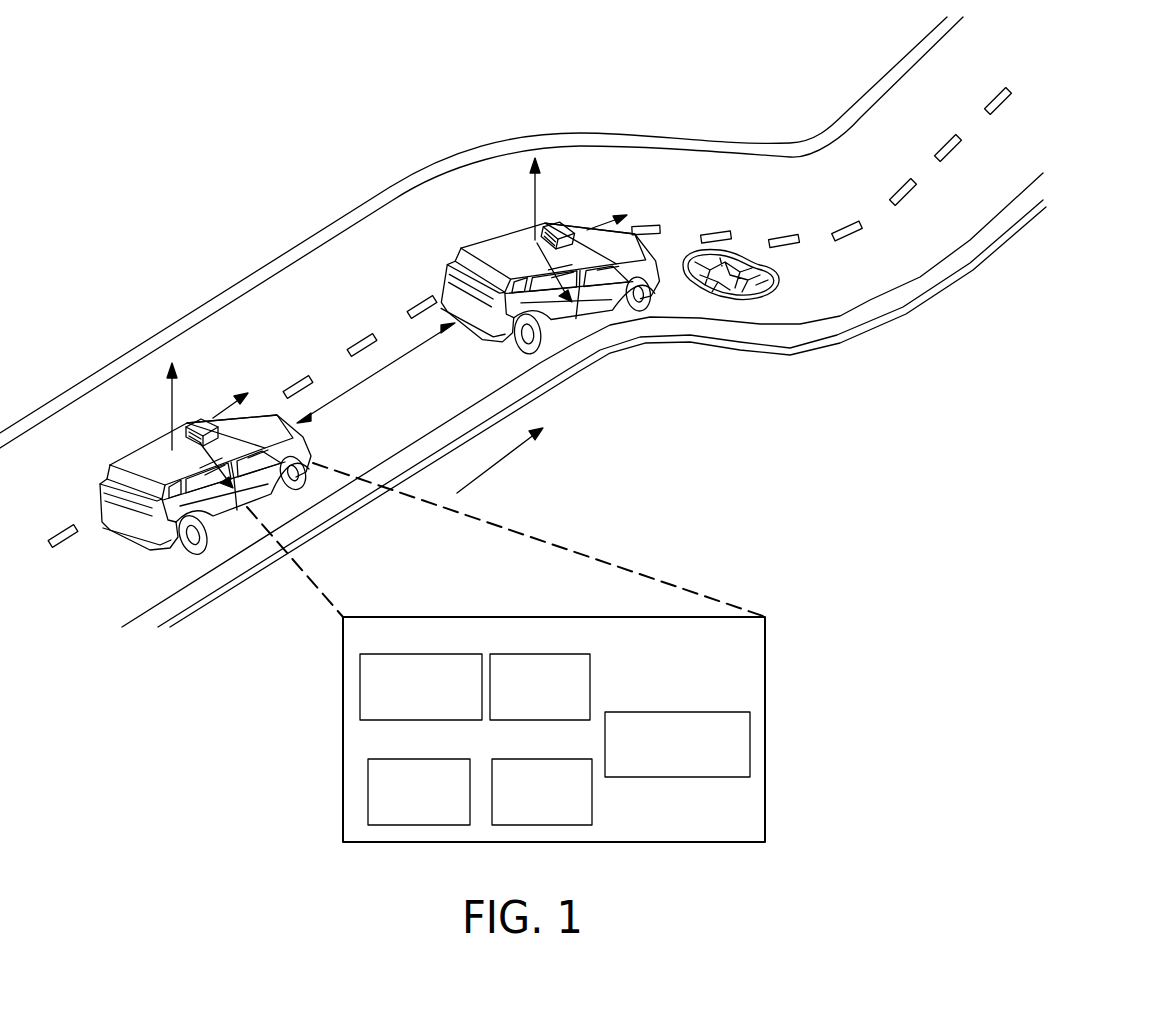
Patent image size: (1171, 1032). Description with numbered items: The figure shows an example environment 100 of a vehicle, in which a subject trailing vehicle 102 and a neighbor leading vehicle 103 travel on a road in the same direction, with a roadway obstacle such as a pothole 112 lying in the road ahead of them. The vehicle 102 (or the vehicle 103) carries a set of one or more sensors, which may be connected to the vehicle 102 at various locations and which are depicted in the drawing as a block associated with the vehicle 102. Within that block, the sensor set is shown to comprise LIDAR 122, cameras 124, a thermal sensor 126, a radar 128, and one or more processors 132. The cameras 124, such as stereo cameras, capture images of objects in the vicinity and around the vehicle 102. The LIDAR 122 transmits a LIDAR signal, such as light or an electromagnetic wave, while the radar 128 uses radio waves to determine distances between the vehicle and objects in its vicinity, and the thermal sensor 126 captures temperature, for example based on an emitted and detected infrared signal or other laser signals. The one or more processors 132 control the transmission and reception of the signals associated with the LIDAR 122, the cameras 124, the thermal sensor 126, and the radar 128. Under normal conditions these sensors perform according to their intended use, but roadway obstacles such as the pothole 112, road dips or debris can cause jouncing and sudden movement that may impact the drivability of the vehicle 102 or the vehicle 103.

The environment 100 is at (1076, 65).
The vehicle 102 is at (133, 452).
The neighbor leading vehicle 103 is at (500, 237).
The pothole 112 is at (733, 253).
The LIDAR 122 is at (545, 652).
The cameras 124 is at (400, 652).
The thermal sensor 126 is at (417, 757).
The radar 128 is at (547, 757).
The one or more processors 132 is at (690, 710).